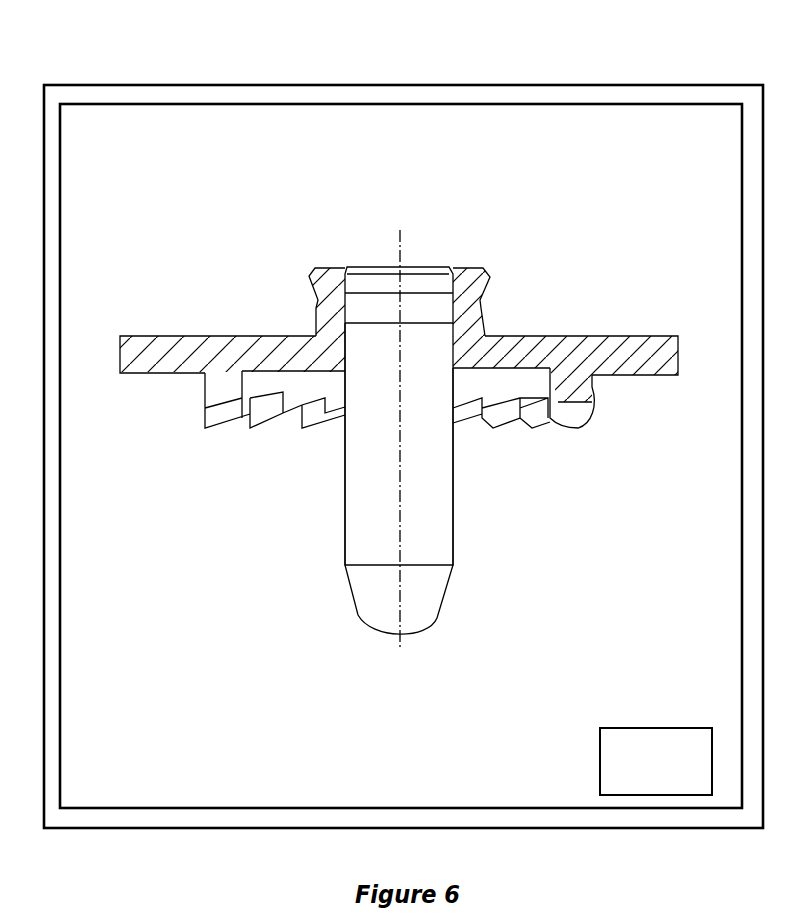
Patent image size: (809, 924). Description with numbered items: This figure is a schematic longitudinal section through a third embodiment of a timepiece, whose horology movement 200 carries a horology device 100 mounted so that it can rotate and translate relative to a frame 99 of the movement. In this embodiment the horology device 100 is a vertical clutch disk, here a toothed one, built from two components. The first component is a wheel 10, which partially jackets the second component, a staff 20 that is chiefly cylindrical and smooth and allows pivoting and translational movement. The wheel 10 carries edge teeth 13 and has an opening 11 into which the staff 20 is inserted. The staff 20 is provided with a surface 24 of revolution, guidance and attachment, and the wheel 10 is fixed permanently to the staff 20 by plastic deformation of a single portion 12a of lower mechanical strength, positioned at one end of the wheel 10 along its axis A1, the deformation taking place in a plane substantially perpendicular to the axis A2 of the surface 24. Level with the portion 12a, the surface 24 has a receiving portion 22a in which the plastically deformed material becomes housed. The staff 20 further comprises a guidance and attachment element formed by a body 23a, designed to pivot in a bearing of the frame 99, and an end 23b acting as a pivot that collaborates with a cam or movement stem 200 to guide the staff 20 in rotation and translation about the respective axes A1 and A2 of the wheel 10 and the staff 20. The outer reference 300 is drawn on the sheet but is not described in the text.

The horology device 100 is at (400, 200).
The horology movement 200 is at (629, 104).
The second component 300 is at (710, 84).
The frame 99 is at (673, 774).
The wheel 10 is at (137, 348).
The opening 11 is at (343, 262).
The plastically deformable portion 12a is at (482, 311).
The edge teeth 13 is at (572, 415).
The staff 20 is at (338, 462).
The receiving portion 22a is at (348, 311).
The body 23a is at (340, 467).
The end 23b is at (353, 610).
The surface 24 is at (346, 313).
The axis of the wheel A1 is at (491, 433).
The axis of the staff A2 is at (400, 232).